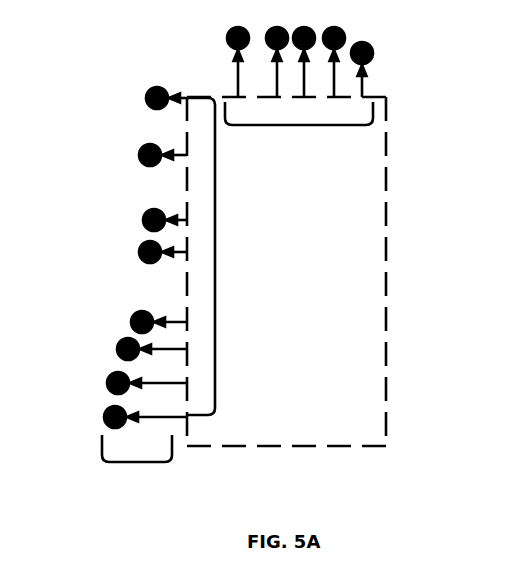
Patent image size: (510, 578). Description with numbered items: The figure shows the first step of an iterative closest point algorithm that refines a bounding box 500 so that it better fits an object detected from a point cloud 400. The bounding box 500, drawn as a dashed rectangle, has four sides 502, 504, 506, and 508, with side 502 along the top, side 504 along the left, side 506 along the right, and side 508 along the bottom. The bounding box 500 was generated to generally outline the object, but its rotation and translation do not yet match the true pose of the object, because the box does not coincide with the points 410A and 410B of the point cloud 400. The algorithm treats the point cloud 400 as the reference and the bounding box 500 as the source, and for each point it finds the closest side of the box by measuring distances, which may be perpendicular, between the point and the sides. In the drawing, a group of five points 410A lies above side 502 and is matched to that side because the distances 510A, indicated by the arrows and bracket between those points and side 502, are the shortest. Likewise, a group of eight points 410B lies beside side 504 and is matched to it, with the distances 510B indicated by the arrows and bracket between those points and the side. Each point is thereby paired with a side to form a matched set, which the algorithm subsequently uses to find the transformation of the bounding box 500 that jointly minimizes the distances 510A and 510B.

The point cloud 400 is at (128, 60).
The bounding box 500 is at (387, 146).
The side 502 is at (210, 96).
The side 504 is at (188, 278).
The side 506 is at (387, 265).
The side 508 is at (318, 447).
The points 410A is at (373, 22).
The points 410B is at (144, 462).
The distances 510A is at (305, 125).
The distances 510B is at (215, 267).